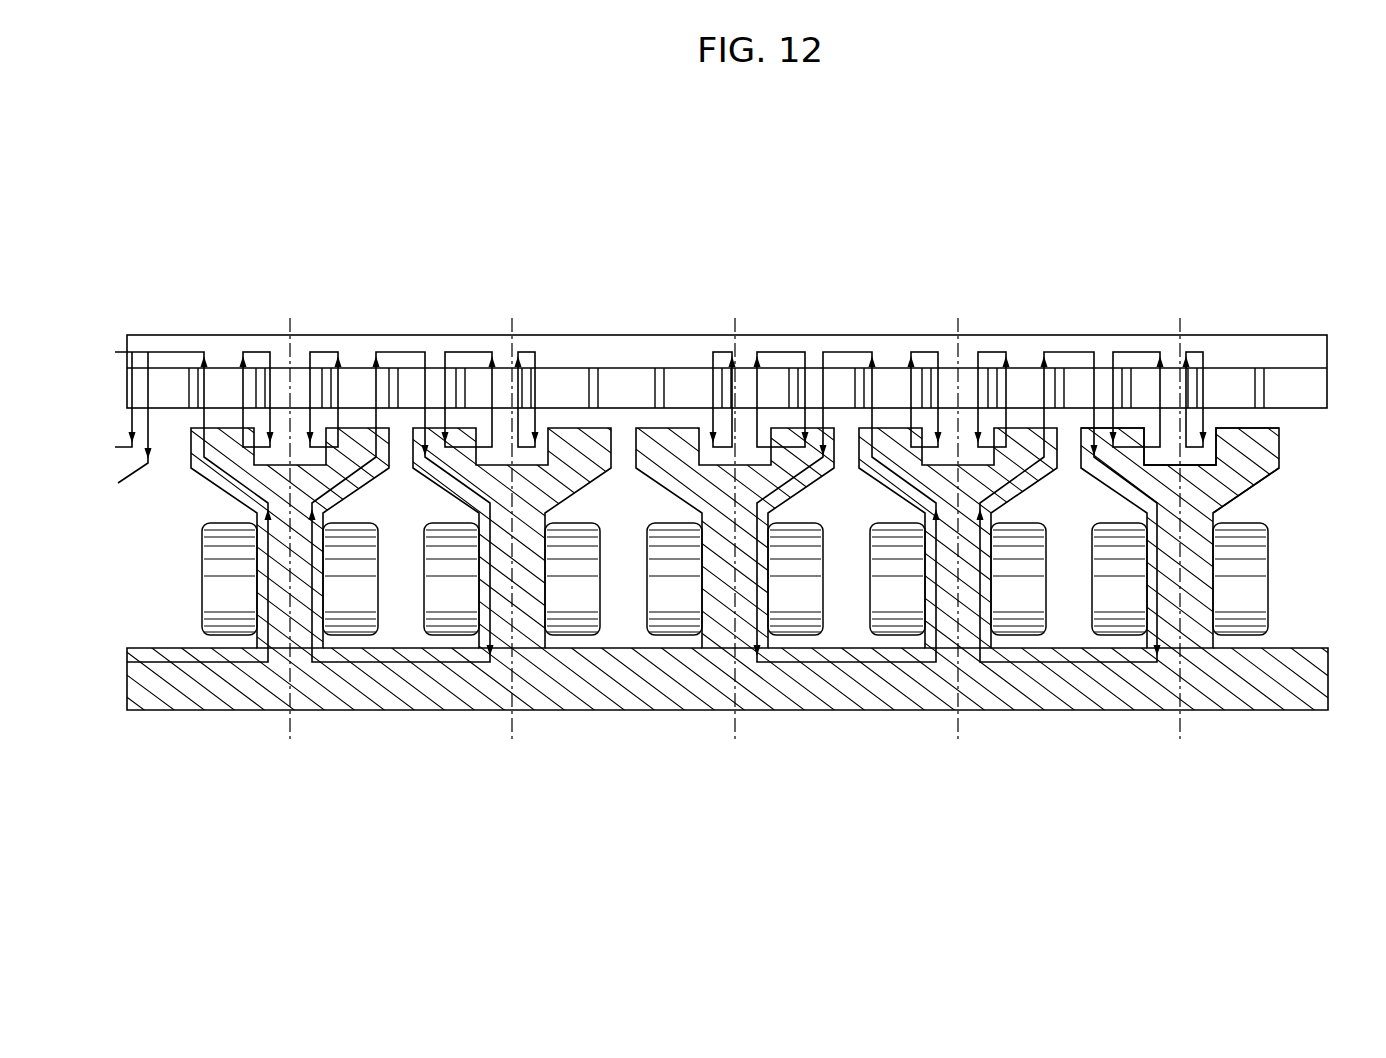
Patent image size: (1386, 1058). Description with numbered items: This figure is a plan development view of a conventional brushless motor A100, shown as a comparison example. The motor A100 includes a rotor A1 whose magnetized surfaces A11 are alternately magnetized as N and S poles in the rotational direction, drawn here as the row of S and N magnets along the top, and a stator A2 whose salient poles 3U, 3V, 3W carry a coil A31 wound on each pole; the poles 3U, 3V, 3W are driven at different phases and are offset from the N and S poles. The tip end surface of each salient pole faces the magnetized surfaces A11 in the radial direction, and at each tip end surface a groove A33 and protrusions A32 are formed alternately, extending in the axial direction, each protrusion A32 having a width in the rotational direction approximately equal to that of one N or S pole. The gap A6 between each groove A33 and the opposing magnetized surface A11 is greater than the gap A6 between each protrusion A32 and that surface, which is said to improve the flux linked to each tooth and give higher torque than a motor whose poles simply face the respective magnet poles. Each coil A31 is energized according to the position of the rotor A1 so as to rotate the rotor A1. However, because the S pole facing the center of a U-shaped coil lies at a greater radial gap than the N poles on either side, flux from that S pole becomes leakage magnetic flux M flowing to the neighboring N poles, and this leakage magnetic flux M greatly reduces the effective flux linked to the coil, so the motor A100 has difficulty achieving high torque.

The brushless motor A100 is at (821, 264).
The rotor A1 is at (568, 289).
The magnetized surfaces A11 is at (623, 367).
The leakage magnetic flux M is at (1140, 351).
The armature unit (stator) A2 is at (607, 802).
The U-phase tooth 3U is at (933, 743).
The V-phase tooth 3V is at (710, 743).
The W-phase tooth 3W is at (1155, 743).
The coil A31 is at (1272, 578).
The protrusions A32 is at (1245, 426).
The groove A33 is at (1146, 454).
The gap A6 is at (1237, 493).